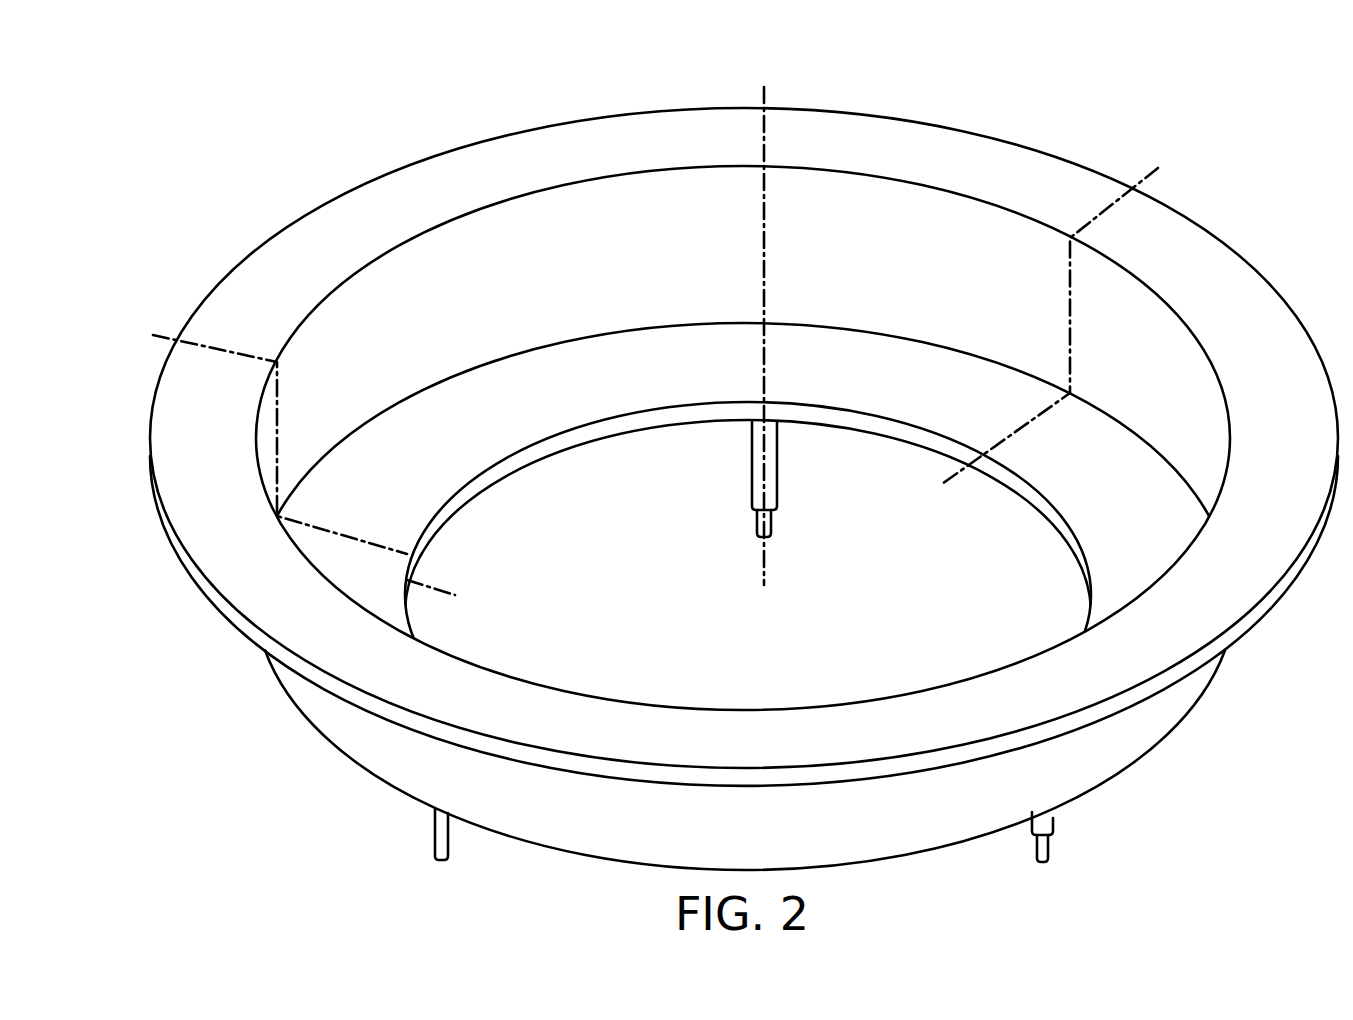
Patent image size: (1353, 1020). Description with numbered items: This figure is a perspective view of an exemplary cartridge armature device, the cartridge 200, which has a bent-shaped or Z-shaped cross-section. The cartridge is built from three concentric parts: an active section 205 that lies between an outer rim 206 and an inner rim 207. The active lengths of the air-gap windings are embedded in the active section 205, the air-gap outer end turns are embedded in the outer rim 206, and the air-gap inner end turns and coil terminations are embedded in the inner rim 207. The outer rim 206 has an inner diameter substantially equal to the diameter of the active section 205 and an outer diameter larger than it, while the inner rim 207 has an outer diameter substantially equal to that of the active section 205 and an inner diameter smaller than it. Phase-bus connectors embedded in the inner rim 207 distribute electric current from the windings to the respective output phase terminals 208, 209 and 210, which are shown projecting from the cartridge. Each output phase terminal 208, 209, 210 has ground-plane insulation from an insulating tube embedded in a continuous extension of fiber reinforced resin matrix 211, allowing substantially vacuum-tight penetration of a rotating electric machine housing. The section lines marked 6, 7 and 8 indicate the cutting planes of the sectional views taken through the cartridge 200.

The cartridge 200 is at (1218, 177).
The active section 205 is at (373, 736).
The outer rim 206 is at (448, 184).
The inner rim 207 is at (381, 552).
The output phase terminal 208 is at (771, 520).
The output phase terminal 209 is at (440, 835).
The output phase terminal 210 is at (1047, 848).
The fiber reinforced resin matrix 211 is at (752, 467).
The section line 6- 6 is at (150, 338).
The section line 7- 7 is at (709, 87).
The section line 8- 8 is at (1158, 168).